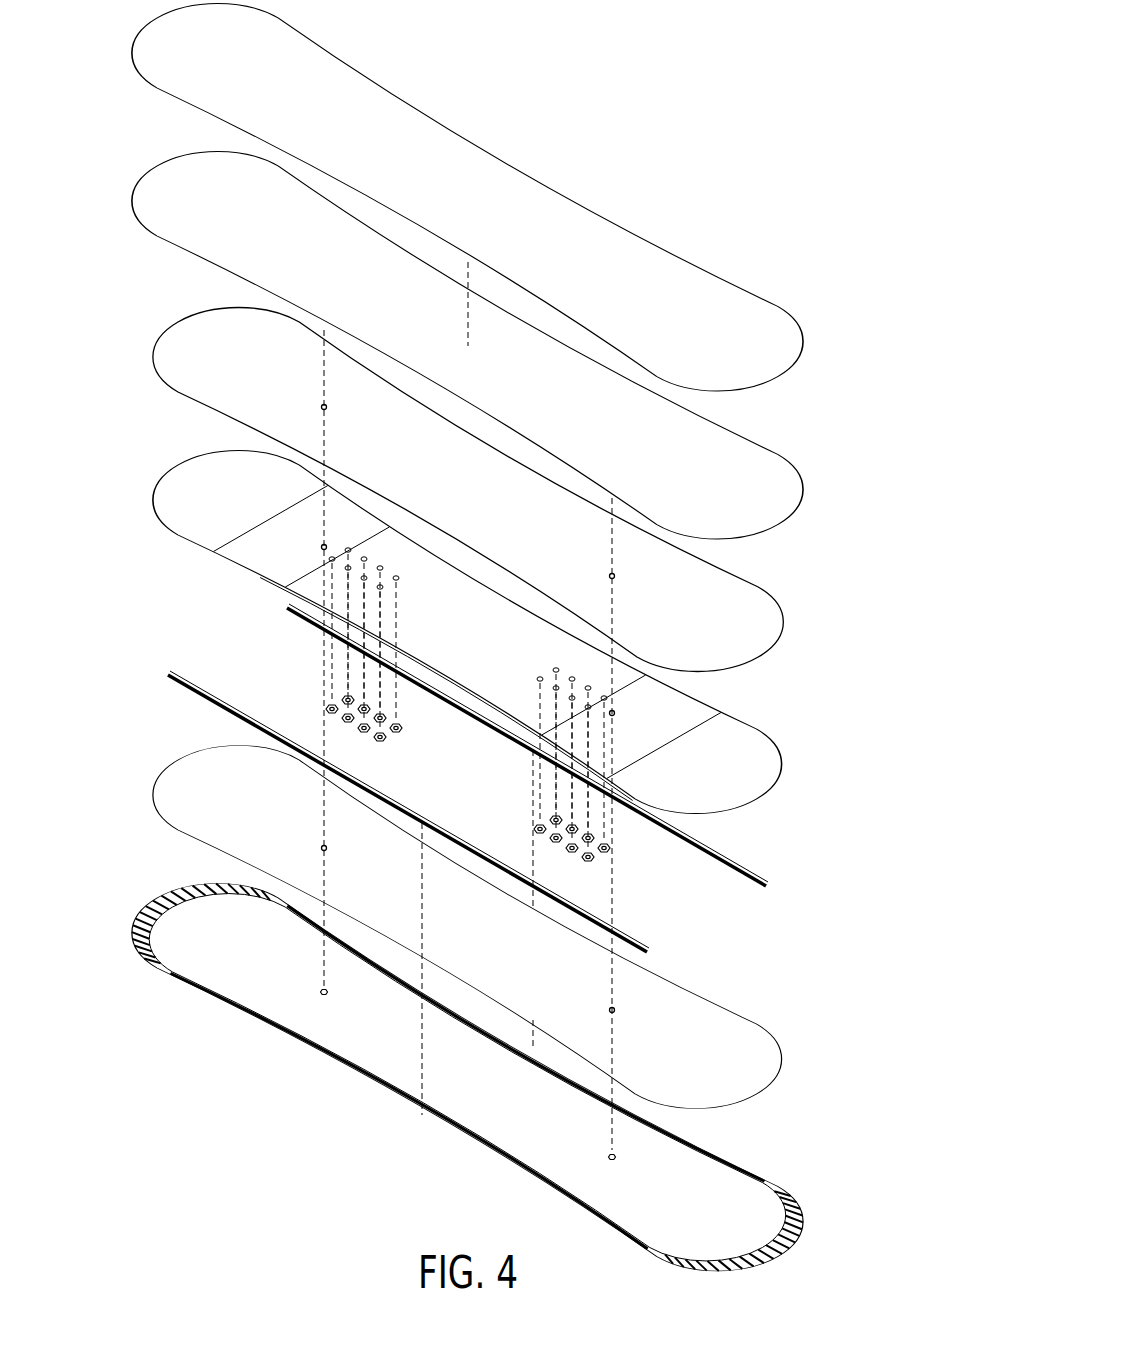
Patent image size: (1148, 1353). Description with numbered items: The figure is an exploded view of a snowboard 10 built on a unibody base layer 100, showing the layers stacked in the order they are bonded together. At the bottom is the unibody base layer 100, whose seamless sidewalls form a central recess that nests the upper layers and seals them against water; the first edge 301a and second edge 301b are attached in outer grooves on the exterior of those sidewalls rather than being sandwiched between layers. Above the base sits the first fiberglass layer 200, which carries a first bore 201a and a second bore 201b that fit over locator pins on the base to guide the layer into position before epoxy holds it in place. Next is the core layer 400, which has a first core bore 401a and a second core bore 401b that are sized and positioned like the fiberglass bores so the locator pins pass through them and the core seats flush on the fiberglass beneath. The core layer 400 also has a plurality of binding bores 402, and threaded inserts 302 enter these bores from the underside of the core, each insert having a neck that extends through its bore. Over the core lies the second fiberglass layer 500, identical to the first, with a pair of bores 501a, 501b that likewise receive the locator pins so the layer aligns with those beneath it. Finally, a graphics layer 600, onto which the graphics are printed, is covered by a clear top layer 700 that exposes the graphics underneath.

The snowboard 10 is at (704, 85).
The top layer 700 is at (755, 281).
The graphics layer 600 is at (784, 450).
The second fiberglass layer 500 is at (772, 589).
The bore of second fiberglass layer 501a is at (322, 405).
The bore of second fiberglass layer 501b is at (614, 577).
The core layer 400 is at (762, 726).
The first core bore 401a is at (322, 545).
The second core bore 401b is at (614, 712).
The binding bores 402 is at (399, 579).
The threaded insert 302 is at (400, 729).
The first edge 301a is at (215, 700).
The second edge 301b is at (743, 868).
The first fiberglass layer 200 is at (764, 1025).
The first bore 201a is at (322, 845).
The second bore 201b is at (614, 1011).
The unibody base layer 100 is at (780, 1170).